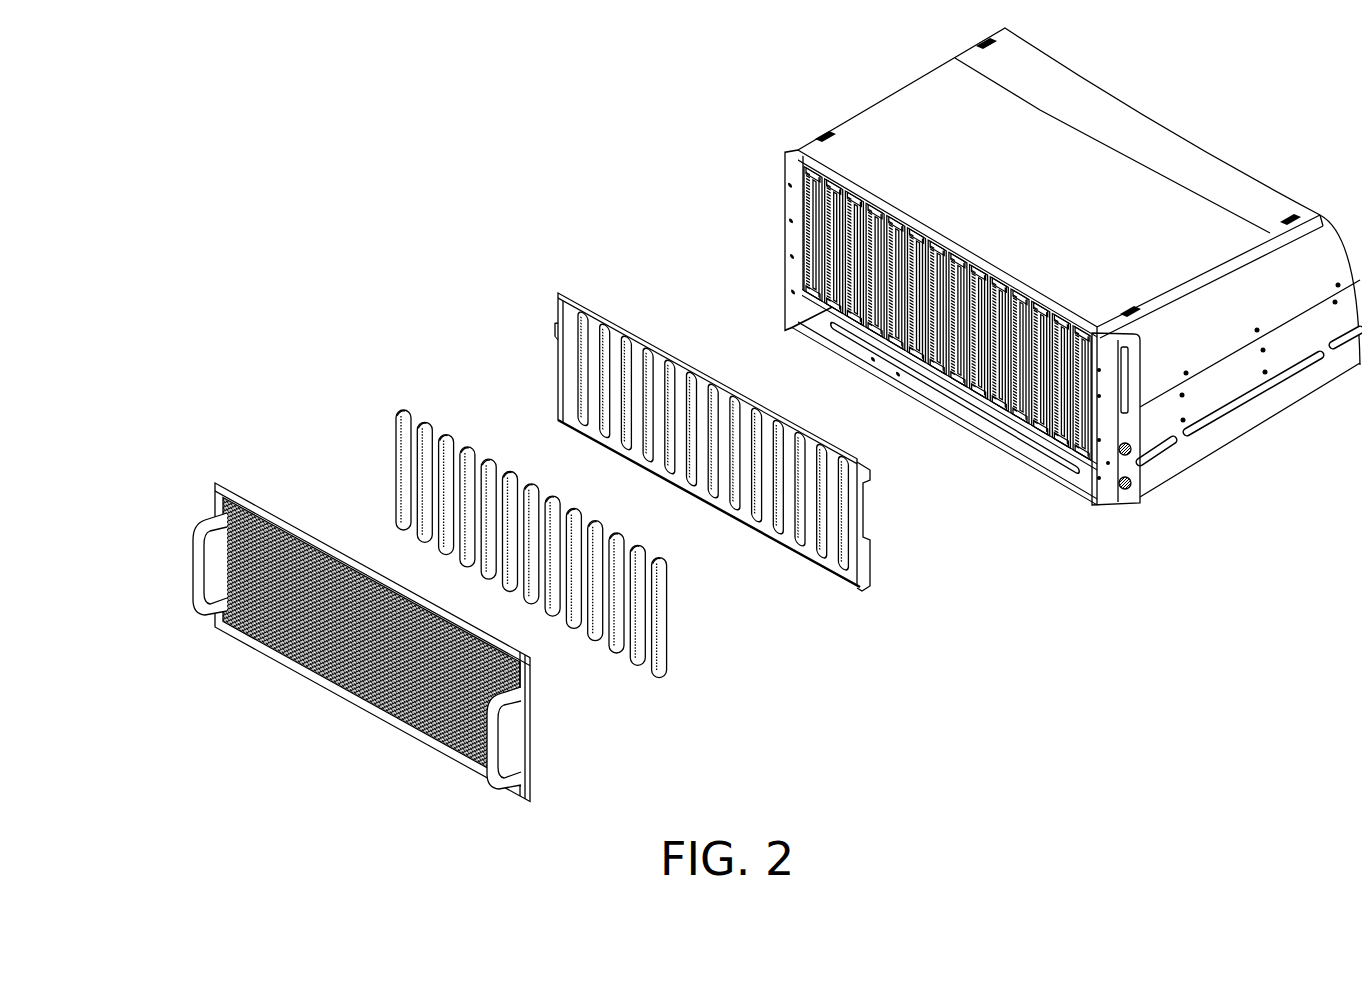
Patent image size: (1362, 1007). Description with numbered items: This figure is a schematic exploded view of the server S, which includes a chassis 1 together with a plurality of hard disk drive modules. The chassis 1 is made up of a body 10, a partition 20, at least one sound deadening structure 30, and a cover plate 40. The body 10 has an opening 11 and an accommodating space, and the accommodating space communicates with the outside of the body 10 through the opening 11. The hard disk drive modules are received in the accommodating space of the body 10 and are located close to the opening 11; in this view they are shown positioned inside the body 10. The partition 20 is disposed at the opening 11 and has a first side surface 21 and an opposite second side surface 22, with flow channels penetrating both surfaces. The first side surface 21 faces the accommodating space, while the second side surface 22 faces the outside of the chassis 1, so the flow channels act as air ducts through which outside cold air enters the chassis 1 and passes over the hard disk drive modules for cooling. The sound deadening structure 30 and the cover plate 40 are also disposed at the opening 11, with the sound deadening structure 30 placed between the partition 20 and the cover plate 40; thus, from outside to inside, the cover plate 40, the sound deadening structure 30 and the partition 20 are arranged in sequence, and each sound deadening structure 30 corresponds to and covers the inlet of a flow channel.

The server S is at (350, 173).
The chassis 1 is at (398, 278).
The body 10 is at (870, 120).
The opening 11 is at (1077, 494).
The partition 20 is at (575, 300).
The first side surface 21 is at (850, 470).
The second side surface 22 is at (836, 574).
The sound deadening structure 30 is at (400, 410).
The cover plate 40 is at (215, 485).